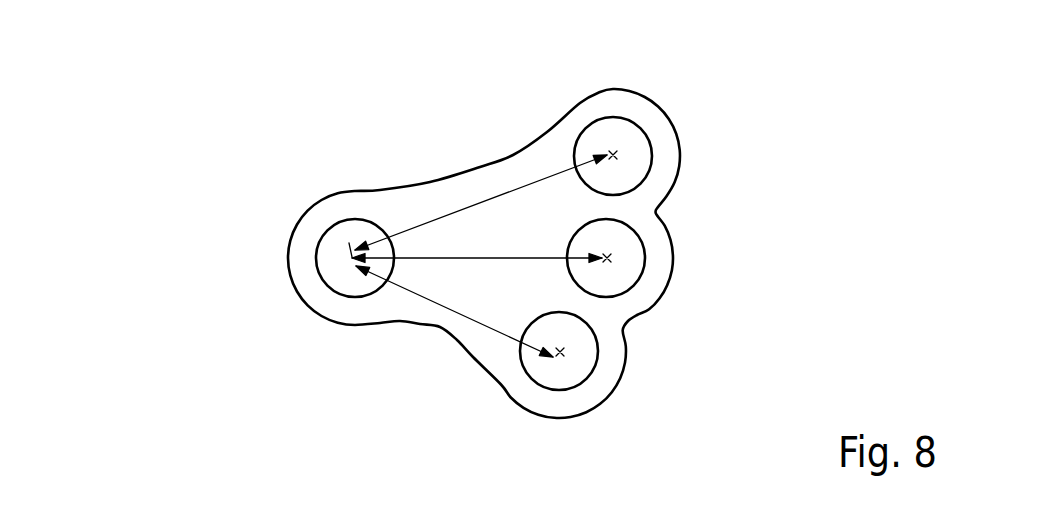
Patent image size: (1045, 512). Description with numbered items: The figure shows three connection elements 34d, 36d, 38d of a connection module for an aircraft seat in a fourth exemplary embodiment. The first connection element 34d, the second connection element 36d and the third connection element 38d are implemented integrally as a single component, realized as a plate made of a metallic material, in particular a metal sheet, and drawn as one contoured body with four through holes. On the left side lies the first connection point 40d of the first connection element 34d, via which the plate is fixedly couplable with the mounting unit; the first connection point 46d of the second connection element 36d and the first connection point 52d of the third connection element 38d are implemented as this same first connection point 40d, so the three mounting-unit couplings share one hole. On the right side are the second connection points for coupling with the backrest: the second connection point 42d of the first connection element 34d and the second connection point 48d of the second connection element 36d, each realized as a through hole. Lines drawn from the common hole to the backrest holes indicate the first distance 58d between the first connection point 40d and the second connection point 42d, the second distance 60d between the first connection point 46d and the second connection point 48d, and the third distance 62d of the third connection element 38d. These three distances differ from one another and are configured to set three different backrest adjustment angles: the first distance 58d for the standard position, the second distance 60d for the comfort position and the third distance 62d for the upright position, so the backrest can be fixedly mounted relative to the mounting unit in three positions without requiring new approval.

The first connection element 34d is at (601, 253).
The second connection element 36d is at (601, 253).
The third connection element 38d is at (602, 313).
The first connection point 40d is at (216, 291).
The first connection point 46d is at (216, 291).
The first connection point 52d is at (333, 265).
The second connection point 48d is at (637, 156).
The second connection point 42d is at (624, 256).
The first distance 58d is at (447, 258).
The second distance 60d is at (508, 188).
The third distance 62d is at (428, 300).